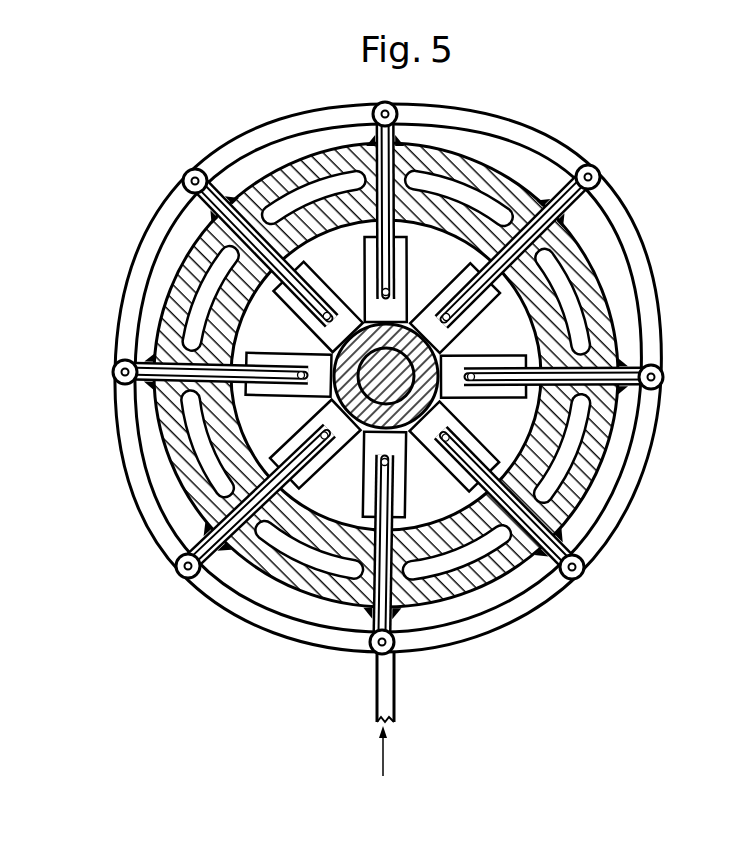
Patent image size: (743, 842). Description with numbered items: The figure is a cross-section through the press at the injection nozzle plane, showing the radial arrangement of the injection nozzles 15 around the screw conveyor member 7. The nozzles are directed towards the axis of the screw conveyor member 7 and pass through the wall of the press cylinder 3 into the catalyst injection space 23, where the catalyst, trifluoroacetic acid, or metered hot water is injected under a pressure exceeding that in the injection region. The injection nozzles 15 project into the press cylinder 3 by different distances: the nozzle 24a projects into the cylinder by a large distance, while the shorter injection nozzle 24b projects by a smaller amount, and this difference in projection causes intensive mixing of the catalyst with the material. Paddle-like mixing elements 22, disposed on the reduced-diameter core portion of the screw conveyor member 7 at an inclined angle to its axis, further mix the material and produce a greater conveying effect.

The press cylinder 3 is at (478, 575).
The screw conveyor member 7 is at (388, 421).
The injection nozzles 15 is at (592, 375).
The mixing elements 22 is at (461, 430).
The catalyst injection space 23 is at (518, 314).
The nozzle projecting by a large distance 24a is at (470, 369).
The shorter injection nozzle 24b is at (305, 449).